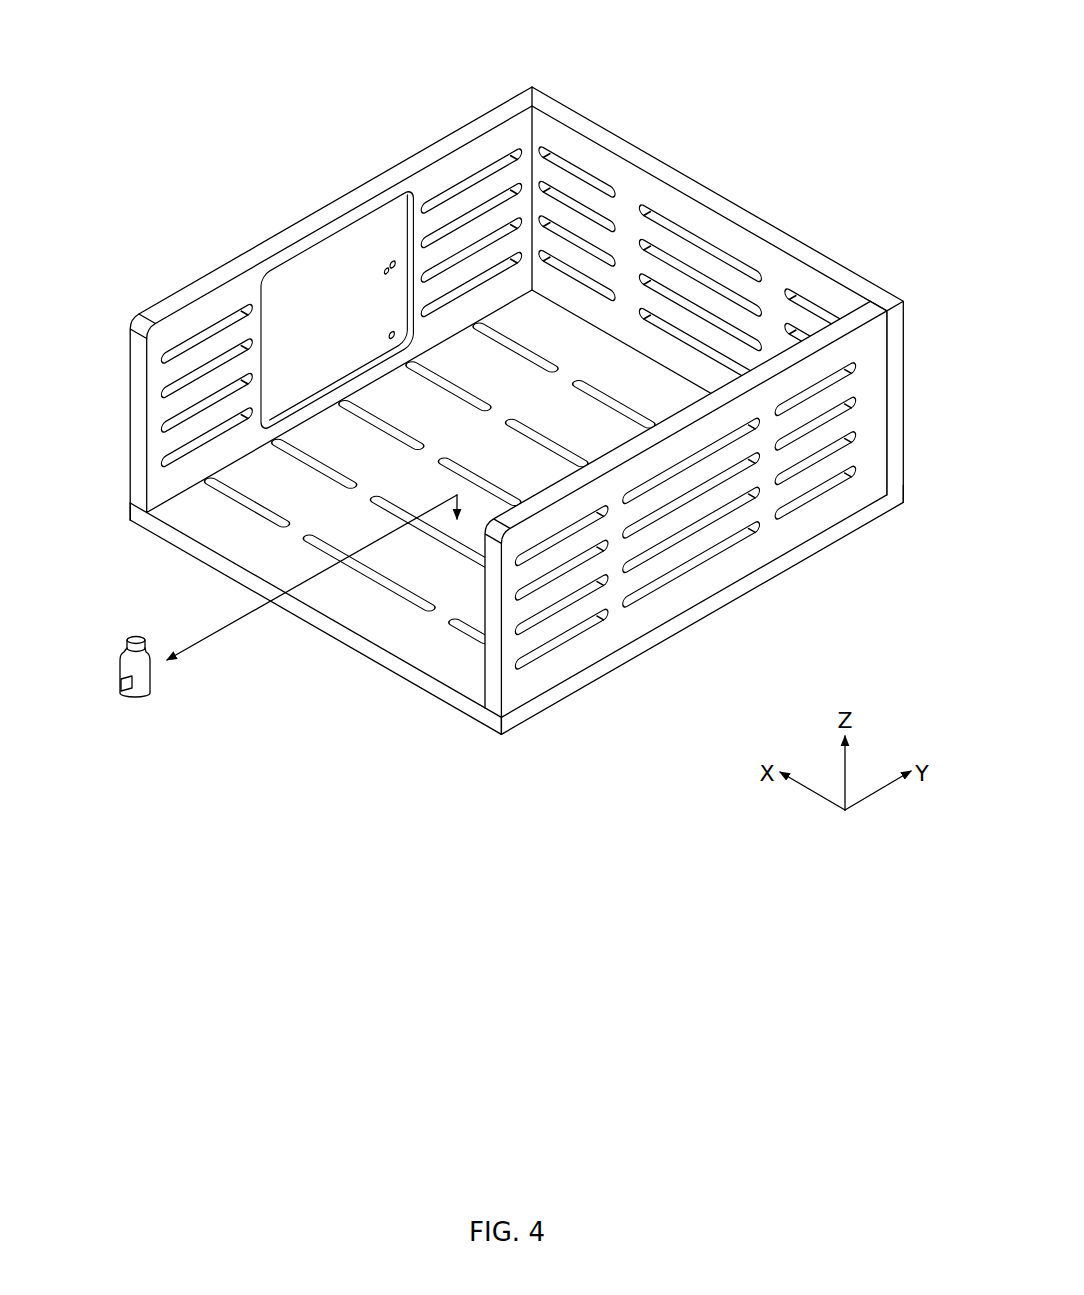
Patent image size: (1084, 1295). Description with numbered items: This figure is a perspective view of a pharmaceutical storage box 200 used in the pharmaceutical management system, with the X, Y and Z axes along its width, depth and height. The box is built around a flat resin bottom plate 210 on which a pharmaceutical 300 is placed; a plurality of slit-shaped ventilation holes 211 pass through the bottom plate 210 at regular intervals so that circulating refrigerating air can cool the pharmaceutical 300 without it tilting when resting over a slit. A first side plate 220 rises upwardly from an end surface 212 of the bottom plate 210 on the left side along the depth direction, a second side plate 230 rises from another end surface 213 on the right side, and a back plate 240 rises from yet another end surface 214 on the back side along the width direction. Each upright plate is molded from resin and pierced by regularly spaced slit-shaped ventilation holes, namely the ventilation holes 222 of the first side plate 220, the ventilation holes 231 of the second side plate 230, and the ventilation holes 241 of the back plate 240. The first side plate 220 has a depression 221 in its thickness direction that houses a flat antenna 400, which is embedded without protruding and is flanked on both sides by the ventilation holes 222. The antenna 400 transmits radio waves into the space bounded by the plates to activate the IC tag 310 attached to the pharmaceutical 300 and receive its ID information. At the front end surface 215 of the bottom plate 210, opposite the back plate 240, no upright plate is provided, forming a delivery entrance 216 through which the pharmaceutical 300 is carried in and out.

The pharmaceutical storage box 200 is at (501, 390).
The bottom plate 210 is at (492, 547).
The ventilation holes 211 is at (240, 506).
The end surface 212 is at (128, 512).
The end surface 213 is at (478, 722).
The end surface 214 is at (903, 498).
The end surface 215 is at (360, 648).
The delivery entrance 216 is at (432, 653).
The first side plate 220 is at (331, 295).
The depression 221 is at (402, 212).
The ventilation holes 222 is at (463, 185).
The second side plate 230 is at (686, 517).
The ventilation holes 231 is at (572, 637).
The back plate 240 is at (717, 280).
The ventilation holes 241 is at (572, 163).
The pharmaceutical 300 is at (155, 696).
The IC tag 310 is at (121, 690).
The antenna 400 is at (352, 250).